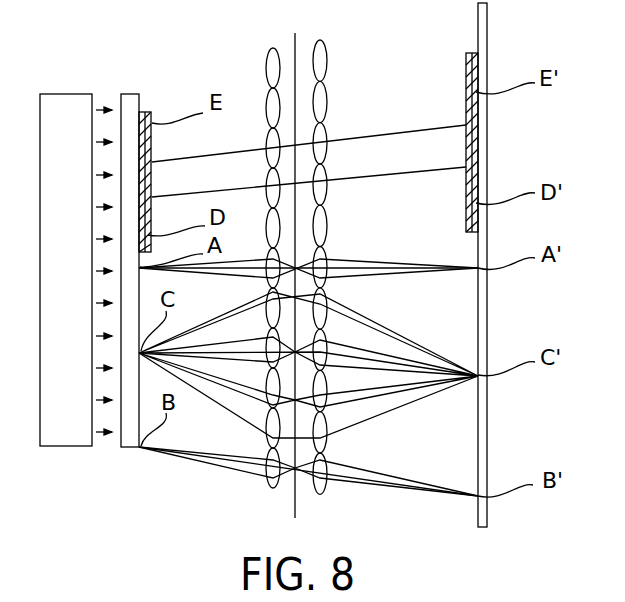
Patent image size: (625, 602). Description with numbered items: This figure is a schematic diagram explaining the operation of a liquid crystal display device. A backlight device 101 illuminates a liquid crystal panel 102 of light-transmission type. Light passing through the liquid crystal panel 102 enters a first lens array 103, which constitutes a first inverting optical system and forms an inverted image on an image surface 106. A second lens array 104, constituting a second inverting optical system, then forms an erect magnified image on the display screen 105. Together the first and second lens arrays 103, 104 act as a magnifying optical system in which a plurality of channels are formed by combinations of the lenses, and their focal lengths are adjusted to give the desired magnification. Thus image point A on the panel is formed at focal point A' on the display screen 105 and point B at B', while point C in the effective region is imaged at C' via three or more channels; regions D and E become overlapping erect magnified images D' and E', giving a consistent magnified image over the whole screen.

The backlight device 101 is at (60, 93).
The liquid crystal panel 102 is at (133, 93).
The first lens array 103 is at (270, 50).
The second lens array 104 is at (324, 92).
The display screen 105 is at (488, 45).
The image surface 106 is at (297, 33).